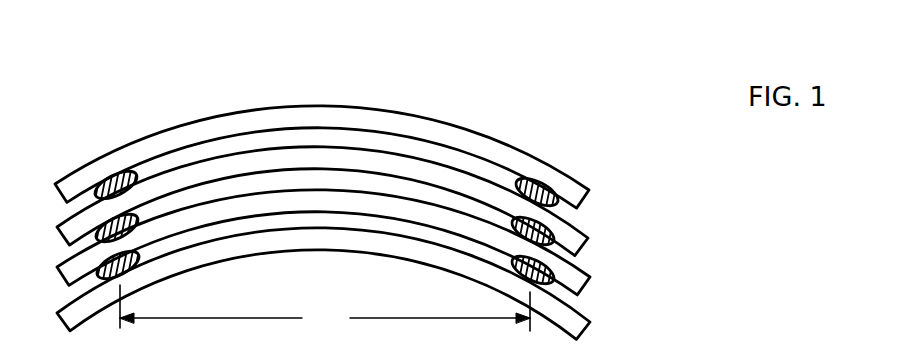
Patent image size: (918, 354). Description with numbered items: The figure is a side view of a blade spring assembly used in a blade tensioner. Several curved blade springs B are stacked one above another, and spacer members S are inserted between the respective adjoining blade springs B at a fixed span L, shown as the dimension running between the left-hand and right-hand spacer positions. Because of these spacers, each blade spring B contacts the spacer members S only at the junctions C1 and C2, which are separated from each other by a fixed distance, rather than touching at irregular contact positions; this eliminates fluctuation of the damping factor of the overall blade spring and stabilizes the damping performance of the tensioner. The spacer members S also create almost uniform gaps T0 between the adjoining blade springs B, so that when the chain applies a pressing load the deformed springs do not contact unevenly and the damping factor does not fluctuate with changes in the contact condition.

The blade spring B is at (322, 188).
The gap T0 is at (400, 77).
The spacer member S is at (112, 175).
The junction C1 is at (135, 298).
The junction C2 is at (518, 304).
The span L is at (325, 301).